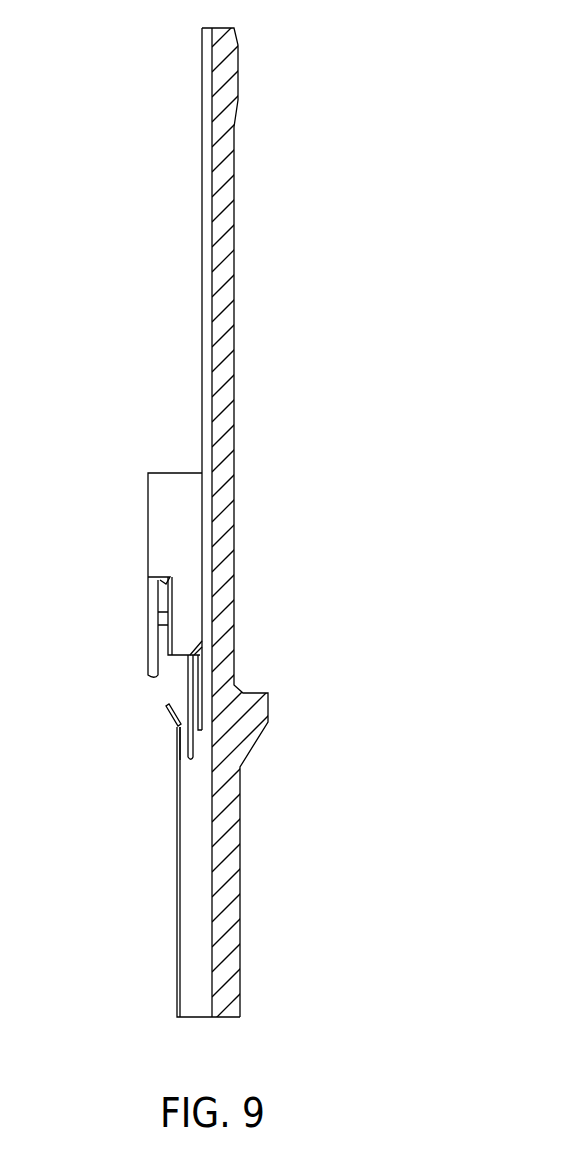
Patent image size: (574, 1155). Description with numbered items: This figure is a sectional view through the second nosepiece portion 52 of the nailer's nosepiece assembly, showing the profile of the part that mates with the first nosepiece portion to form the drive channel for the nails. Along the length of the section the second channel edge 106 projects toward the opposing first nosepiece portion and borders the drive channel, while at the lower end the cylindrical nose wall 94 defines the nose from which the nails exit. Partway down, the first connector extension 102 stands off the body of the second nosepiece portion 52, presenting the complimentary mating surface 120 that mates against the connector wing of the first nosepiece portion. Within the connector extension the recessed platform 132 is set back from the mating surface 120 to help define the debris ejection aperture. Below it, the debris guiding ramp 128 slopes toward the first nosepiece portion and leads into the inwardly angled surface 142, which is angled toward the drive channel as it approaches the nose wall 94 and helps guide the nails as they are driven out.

The second nosepiece portion 52 is at (106, 79).
The second channel edge 106 is at (202, 368).
The nose wall 94 is at (195, 973).
The first connector extension 102 is at (148, 497).
The complimentary mating surface 120 is at (148, 540).
The debris guiding ramp 128 is at (199, 651).
The recessed platform 132 is at (178, 694).
The inwardly angled surface 142 is at (168, 703).